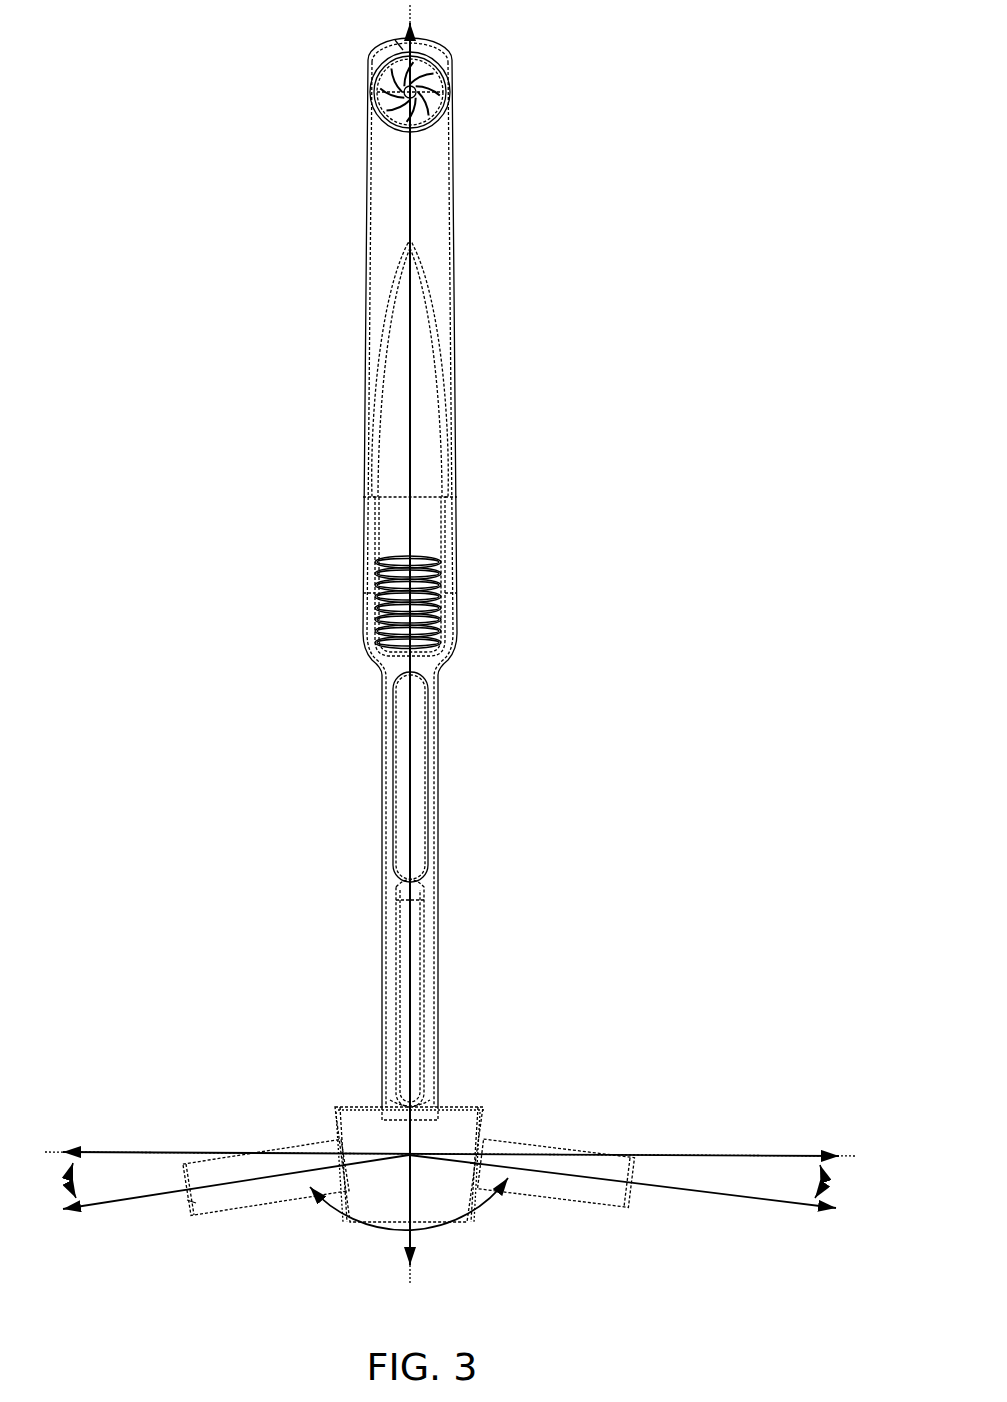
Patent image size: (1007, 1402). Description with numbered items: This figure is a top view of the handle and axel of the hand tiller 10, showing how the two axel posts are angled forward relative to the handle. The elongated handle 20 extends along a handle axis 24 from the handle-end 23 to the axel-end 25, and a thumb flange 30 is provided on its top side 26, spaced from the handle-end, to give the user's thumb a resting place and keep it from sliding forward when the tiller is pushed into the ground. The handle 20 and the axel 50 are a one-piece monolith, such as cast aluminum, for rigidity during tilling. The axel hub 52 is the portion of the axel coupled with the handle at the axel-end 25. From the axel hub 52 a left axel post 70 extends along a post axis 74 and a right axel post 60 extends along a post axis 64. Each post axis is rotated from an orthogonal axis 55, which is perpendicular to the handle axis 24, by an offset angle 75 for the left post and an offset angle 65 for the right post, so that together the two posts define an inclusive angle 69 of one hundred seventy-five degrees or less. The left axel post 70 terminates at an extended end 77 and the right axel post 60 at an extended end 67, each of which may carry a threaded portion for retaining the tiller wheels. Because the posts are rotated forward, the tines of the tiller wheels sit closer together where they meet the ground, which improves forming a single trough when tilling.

The hand tiller 10 is at (332, 277).
The handle 20 is at (422, 792).
The handle-end 23 is at (430, 46).
The handle axis 24 is at (416, 194).
The axel-end 25 is at (390, 1112).
The top side 26 is at (417, 414).
The thumb flange 30 is at (415, 624).
The axel 50 is at (461, 1142).
The axel hub 52 is at (438, 1118).
The orthogonal axis 55 is at (660, 1150).
The right axel post 60 is at (243, 1197).
The post axis 64 is at (84, 1210).
The offset angle 65 is at (82, 1180).
The extended end 67 is at (195, 1205).
The inclusive angle 69 is at (494, 1220).
The left axel post 70 is at (530, 1173).
The post axis 74 is at (775, 1207).
The offset angle 75 is at (812, 1183).
The extended end 77 is at (628, 1197).